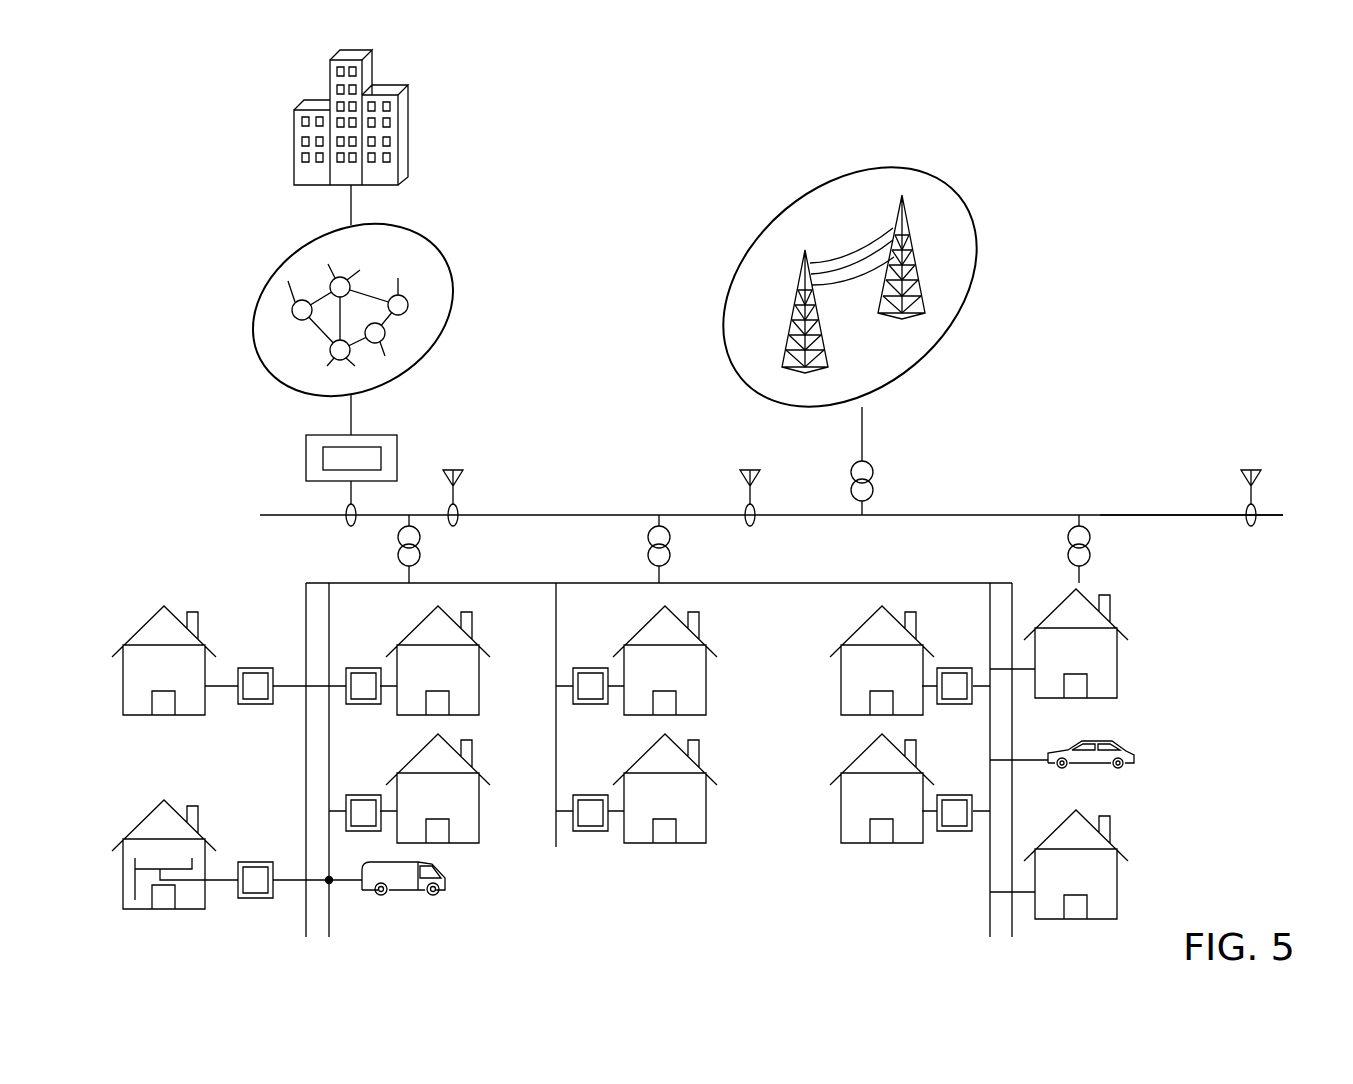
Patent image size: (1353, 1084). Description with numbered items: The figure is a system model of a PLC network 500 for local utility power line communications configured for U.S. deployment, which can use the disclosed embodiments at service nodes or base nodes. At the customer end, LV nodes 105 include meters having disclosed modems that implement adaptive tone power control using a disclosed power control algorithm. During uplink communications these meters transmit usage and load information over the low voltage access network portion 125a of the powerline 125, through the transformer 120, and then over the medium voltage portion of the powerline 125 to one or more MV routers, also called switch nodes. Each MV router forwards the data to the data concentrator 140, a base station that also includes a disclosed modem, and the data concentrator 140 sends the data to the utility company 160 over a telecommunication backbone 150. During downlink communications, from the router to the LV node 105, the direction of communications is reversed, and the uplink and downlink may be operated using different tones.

The PLC network 500 is at (1000, 171).
The utility company 160 is at (411, 128).
The telecommunication backbone 150 is at (453, 283).
The powerline 125 is at (953, 583).
The low voltage access network portion 125a is at (777, 585).
The data concentrator 140 is at (305, 452).
The transformer 120 is at (648, 552).
The LV node 105 is at (333, 883).